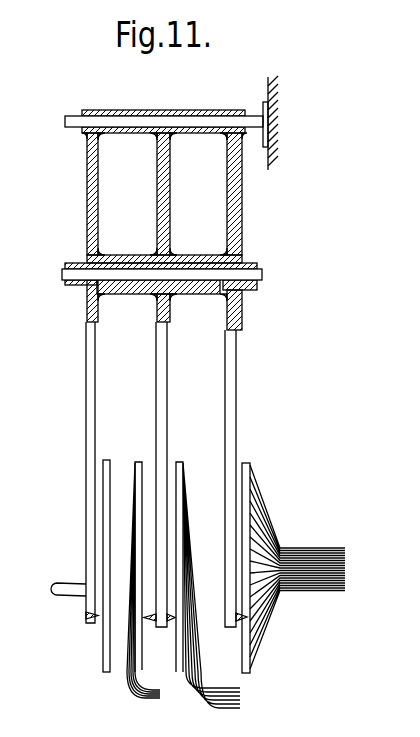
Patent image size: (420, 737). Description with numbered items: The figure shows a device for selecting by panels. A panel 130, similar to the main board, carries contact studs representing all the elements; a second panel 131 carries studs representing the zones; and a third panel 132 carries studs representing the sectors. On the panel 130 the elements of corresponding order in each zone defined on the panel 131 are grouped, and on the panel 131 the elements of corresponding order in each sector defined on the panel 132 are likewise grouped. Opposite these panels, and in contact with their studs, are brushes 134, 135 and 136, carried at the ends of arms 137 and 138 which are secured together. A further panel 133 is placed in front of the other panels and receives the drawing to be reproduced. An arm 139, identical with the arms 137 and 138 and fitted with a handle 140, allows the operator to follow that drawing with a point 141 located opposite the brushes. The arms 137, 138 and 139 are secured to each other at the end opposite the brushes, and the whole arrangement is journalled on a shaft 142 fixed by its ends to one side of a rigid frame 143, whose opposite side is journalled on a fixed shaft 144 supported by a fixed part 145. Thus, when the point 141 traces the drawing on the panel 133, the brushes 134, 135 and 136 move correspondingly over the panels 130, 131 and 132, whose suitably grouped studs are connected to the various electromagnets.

The panel 130 is at (246, 676).
The second panel 131 is at (179, 680).
The third panel 132 is at (126, 697).
The panel 133 is at (104, 664).
The brush 134 is at (239, 617).
The brush 135 is at (169, 617).
The brush 136 is at (146, 619).
The arm 137 is at (231, 415).
The arm 138 is at (161, 415).
The arm 139 is at (90, 413).
The handle 140 is at (58, 587).
The point 141 is at (91, 616).
The shaft 142 is at (248, 277).
The rigid frame 143 is at (243, 207).
The fixed shaft 144 is at (157, 126).
The fixed part 145 is at (271, 138).